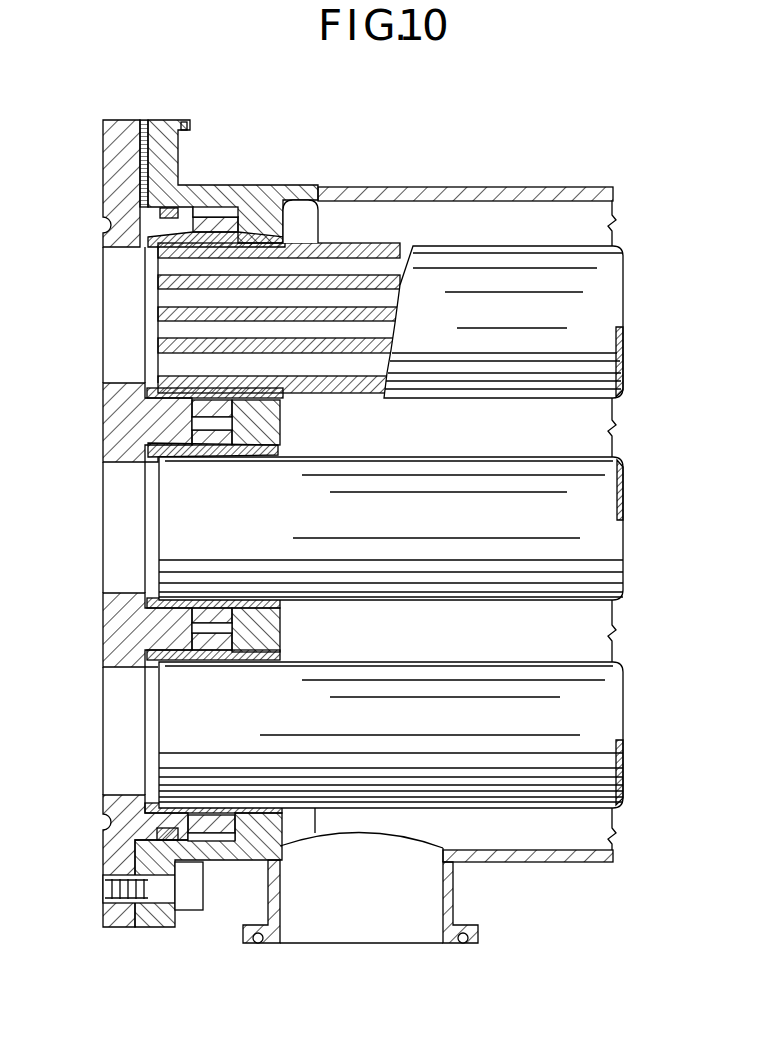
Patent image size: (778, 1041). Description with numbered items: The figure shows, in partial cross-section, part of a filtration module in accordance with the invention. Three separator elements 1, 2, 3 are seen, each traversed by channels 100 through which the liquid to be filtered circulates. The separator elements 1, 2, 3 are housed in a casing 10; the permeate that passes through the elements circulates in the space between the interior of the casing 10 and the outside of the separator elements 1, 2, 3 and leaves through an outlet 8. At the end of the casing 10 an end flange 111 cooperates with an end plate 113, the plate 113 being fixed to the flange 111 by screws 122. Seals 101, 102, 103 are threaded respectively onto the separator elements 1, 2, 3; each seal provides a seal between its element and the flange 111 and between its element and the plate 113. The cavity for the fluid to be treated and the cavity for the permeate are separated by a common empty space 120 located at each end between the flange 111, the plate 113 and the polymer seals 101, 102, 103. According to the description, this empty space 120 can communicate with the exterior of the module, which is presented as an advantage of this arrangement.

The separator element 1 is at (597, 272).
The separator element 2 is at (598, 485).
The separator element 3 is at (598, 687).
The outlet 8 is at (385, 925).
The casing 10 is at (484, 187).
The channels 100 is at (170, 365).
The seal 101 is at (220, 235).
The seal 102 is at (232, 600).
The seal 103 is at (218, 805).
The end flange 111 is at (162, 143).
The end plate 113 is at (120, 195).
The empty space 120 is at (207, 208).
The screws 122 is at (190, 905).